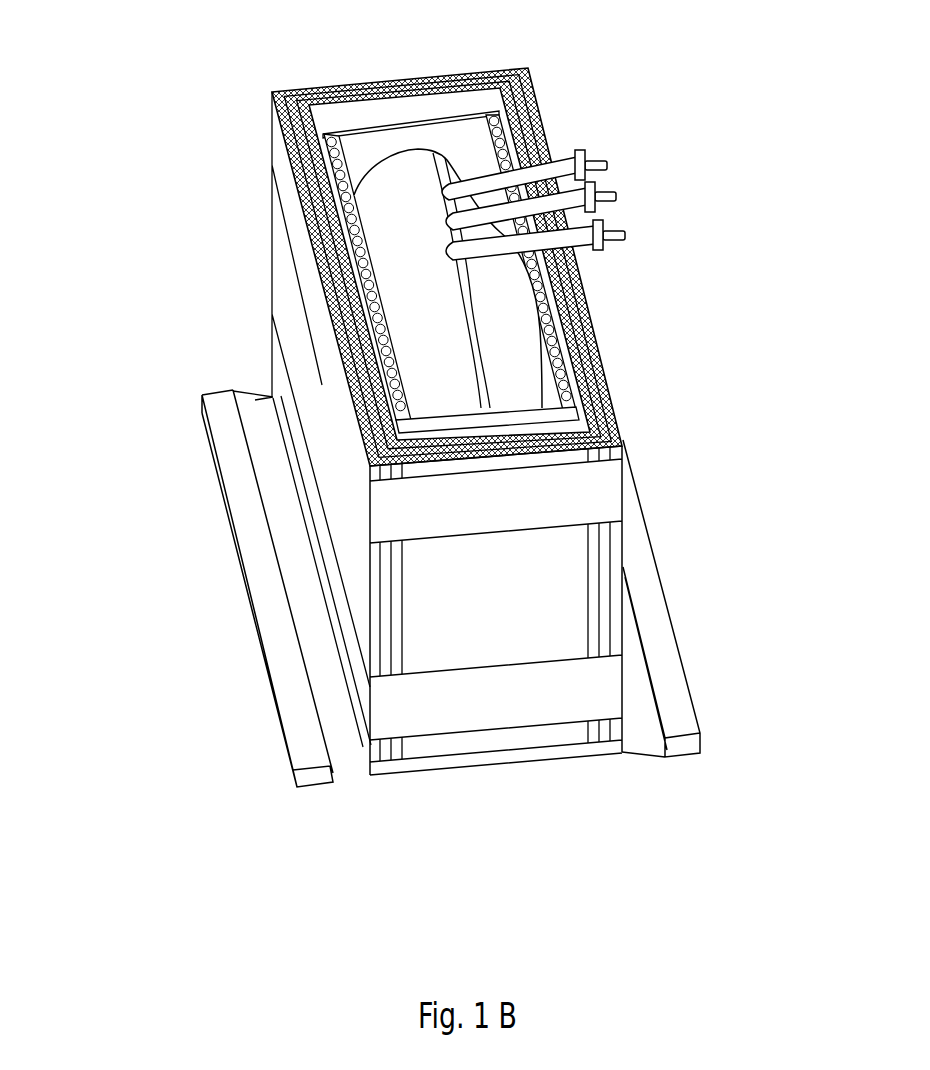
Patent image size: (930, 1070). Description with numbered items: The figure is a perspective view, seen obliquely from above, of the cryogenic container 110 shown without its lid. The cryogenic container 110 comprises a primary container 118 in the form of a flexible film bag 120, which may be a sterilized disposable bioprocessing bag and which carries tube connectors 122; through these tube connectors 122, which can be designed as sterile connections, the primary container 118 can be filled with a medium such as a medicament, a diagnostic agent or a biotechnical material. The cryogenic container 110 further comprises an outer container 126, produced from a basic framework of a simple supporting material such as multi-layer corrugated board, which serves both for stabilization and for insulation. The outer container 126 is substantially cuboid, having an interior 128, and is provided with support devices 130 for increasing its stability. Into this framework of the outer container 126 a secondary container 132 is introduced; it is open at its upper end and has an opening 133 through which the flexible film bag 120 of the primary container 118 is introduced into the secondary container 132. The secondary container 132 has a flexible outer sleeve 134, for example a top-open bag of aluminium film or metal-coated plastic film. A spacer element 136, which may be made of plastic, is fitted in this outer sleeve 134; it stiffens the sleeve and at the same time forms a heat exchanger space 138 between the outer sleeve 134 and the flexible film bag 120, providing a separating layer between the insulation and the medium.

The cryogenic container 110 is at (222, 178).
The primary container 118 is at (399, 168).
The flexible film bag 120 is at (399, 168).
The tube connectors 122 is at (626, 242).
The outer container 126 is at (500, 647).
The interior 128 is at (368, 143).
The support devices 130 is at (278, 652).
The secondary container 132 is at (558, 332).
The opening 133 is at (470, 140).
The outer sleeve 134 is at (497, 424).
The spacer element 136 is at (598, 345).
The heat exchanger space 138 is at (584, 292).